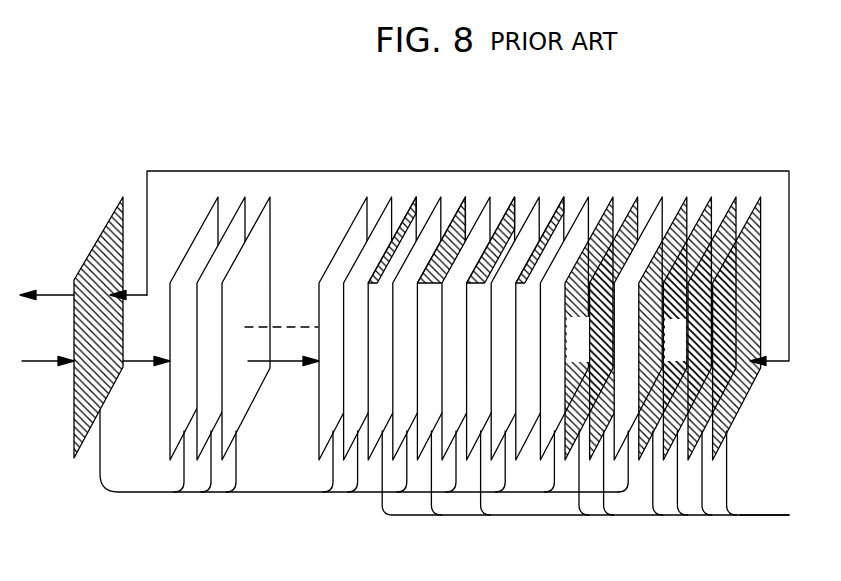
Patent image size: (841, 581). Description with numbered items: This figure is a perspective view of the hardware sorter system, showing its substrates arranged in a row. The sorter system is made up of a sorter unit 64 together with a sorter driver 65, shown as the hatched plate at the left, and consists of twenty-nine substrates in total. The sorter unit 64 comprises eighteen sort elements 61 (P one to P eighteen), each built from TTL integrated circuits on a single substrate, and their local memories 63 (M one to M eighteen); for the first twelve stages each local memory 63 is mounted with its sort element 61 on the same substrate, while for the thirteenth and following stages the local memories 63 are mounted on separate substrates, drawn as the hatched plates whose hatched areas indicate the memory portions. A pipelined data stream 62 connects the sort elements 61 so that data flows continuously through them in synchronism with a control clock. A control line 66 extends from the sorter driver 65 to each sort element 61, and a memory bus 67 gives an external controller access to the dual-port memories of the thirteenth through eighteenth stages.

The sort element 61 is at (271, 245).
The pipelined data stream 62 is at (330, 171).
The local memory 63 is at (522, 195).
The sorter unit 64 is at (367, 497).
The sorter driver 65 is at (75, 412).
The control line 66 is at (283, 492).
The memory bus 67 is at (765, 512).